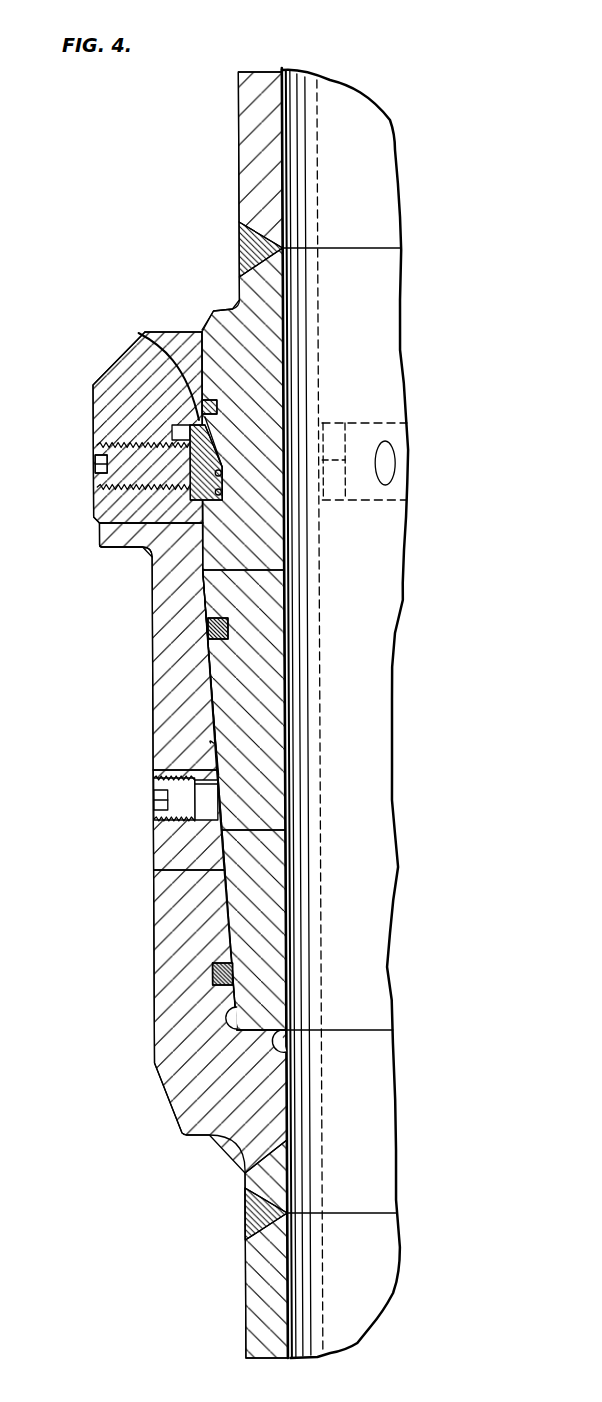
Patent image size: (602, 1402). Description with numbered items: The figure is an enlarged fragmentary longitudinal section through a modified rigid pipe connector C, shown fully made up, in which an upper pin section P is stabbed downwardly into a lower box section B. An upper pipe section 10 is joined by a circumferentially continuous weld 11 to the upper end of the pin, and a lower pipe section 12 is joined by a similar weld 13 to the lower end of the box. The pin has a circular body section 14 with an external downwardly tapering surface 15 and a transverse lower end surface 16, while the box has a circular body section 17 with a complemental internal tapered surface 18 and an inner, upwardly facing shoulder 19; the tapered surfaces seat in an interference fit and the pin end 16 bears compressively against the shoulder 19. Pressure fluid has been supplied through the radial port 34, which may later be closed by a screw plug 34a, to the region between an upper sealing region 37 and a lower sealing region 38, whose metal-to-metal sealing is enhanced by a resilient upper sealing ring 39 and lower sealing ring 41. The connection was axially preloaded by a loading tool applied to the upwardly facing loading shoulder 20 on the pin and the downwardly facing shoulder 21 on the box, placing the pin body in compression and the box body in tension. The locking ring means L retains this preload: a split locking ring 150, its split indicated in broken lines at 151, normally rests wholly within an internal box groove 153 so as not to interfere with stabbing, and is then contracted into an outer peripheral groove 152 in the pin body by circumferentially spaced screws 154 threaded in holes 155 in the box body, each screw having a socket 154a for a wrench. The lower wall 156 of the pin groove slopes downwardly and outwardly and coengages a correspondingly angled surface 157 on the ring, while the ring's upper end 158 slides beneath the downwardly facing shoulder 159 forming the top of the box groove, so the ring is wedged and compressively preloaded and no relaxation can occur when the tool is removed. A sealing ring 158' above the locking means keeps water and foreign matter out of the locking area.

The upper pipe section 10 is at (253, 118).
The weld 11 is at (240, 235).
The lower pipe section 12 is at (258, 1312).
The weld 13 is at (252, 1213).
The pin body section 14 is at (271, 712).
The tapered surface 15 is at (210, 743).
The lower end surface 16 is at (282, 1048).
The box body section 17 is at (155, 898).
The tapered surface 18 is at (220, 708).
The shoulder 19 is at (258, 1030).
The loading shoulder 20 is at (227, 303).
The shoulder 21 is at (117, 548).
The pressure port 34 is at (207, 805).
The screw plug 34a is at (150, 785).
The upper sealing region 37 is at (205, 612).
The lower sealing region 38 is at (232, 910).
The upper sealing ring 39 is at (205, 631).
The lower sealing ring 41 is at (208, 977).
The split locking ring 150 is at (222, 450).
The split 151 is at (345, 444).
The pin groove 152 is at (218, 486).
The box groove 153 is at (175, 430).
The screws 154 is at (107, 455).
The socket 154a is at (100, 472).
The holes 155 is at (125, 490).
The lower wall 156 is at (210, 488).
The angled surface 157 is at (203, 518).
The upper end 158 is at (131, 371).
The sealing ring 158' is at (292, 368).
The shoulder 159 is at (172, 428).
The locking ring means L is at (214, 424).
The pin section P is at (220, 662).
The box section B is at (150, 843).
The pipe connector C is at (116, 1022).